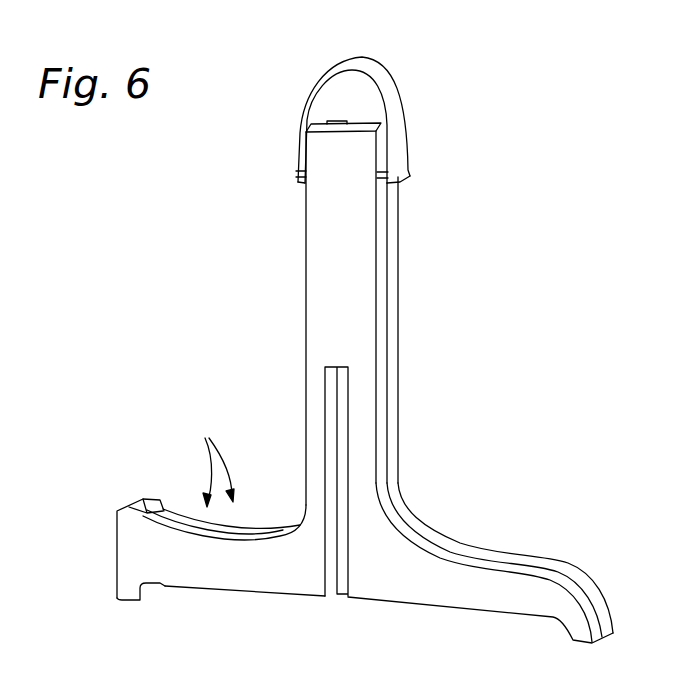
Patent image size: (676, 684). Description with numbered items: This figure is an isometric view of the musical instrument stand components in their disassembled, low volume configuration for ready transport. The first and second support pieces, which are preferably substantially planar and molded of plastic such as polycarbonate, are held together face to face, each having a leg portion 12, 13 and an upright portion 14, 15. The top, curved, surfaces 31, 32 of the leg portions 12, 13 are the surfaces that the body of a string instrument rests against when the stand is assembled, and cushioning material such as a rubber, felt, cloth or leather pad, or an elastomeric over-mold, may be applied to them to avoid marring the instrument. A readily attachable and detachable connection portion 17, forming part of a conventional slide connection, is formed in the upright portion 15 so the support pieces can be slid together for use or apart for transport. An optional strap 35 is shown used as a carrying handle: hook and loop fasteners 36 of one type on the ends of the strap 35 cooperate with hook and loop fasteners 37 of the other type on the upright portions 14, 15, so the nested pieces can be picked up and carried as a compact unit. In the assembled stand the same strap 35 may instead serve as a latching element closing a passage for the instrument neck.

The leg portion 12 is at (150, 502).
The leg portion 13 is at (202, 567).
The upright portion 14 is at (389, 343).
The upright portion 15 is at (339, 248).
The connection portion 17 is at (333, 414).
The top curved surface 31 is at (205, 460).
The top curved surface 32 is at (221, 470).
The strap 35 is at (385, 98).
The hook and loop fasteners 36 is at (298, 173).
The hook and loop fasteners 37 is at (410, 176).